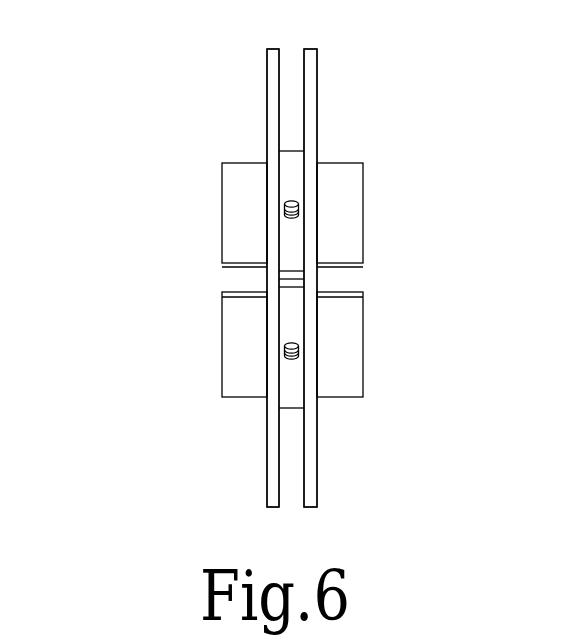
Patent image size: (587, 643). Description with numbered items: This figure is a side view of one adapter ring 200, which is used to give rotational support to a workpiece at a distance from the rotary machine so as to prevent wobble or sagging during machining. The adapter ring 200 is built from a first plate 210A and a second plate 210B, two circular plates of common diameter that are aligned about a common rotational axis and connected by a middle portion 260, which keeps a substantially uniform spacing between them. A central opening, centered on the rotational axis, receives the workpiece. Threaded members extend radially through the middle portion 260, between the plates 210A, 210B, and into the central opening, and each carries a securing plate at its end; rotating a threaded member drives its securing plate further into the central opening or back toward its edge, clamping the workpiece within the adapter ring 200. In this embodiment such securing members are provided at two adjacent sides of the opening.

The adapter ring 200 is at (430, 118).
The first plate 210A is at (272, 80).
The second plate 210B is at (310, 73).
The middle portion 260 is at (288, 168).